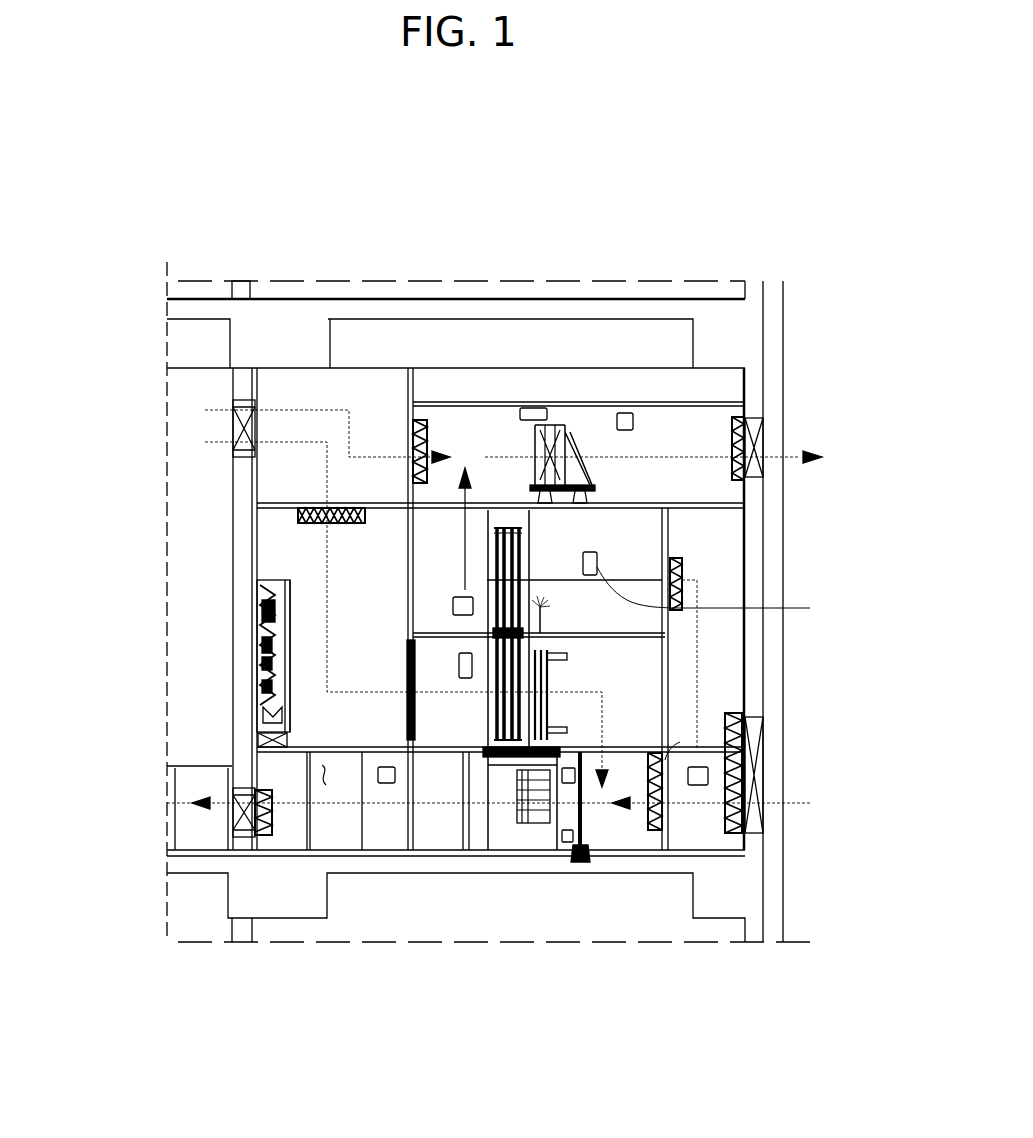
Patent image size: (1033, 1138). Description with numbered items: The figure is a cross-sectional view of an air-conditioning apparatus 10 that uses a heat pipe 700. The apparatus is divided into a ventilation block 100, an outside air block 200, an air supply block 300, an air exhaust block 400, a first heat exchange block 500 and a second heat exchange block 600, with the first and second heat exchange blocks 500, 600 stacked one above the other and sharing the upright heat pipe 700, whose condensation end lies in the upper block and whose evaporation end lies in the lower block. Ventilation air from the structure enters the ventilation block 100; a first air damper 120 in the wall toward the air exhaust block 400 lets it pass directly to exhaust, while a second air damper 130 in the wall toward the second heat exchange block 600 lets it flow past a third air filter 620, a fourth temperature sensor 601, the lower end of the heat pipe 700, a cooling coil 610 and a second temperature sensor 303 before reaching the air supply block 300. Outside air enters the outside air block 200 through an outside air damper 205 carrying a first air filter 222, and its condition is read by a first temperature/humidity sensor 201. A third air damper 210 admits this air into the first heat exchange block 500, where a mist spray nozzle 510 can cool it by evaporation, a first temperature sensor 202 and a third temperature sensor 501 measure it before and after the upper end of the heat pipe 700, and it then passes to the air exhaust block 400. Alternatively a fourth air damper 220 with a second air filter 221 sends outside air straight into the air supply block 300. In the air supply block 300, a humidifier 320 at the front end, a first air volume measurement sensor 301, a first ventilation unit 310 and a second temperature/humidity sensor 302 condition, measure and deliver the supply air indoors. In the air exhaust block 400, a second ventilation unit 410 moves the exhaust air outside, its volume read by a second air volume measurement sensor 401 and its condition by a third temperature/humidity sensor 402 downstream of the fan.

The air-conditioning apparatus 10 is at (740, 205).
The ventilation block 100 is at (314, 393).
The first air damper 120 is at (410, 433).
The second air damper 130 is at (317, 533).
The outside air block 200 is at (700, 643).
The first temperature/humidity sensor 201 is at (698, 767).
The first temperature sensor 202 is at (771, 613).
The outside air damper 205 is at (763, 777).
The third air damper 210 is at (682, 570).
The fourth air damper 220 is at (667, 762).
The second air filter 221 is at (653, 823).
The first air filter 222 is at (720, 817).
The air supply block 300 is at (320, 777).
The first air volume measurement sensor 301 is at (585, 787).
The second temperature/humidity sensor 302 is at (378, 773).
The second temperature sensor 303 is at (493, 707).
The first ventilation unit 310 is at (540, 820).
The humidifier 320 is at (567, 842).
The air exhaust block 400 is at (683, 427).
The second air volume measurement sensor 401 is at (525, 410).
The third temperature/humidity sensor 402 is at (625, 411).
The second ventilation unit 410 is at (570, 443).
The first heat exchange block 500 is at (455, 531).
The third temperature sensor 501 is at (453, 608).
The mist spray nozzle 510 is at (533, 610).
The second heat exchange block 600 is at (750, 797).
The fourth temperature sensor 601 is at (459, 665).
The cooling coil 610 is at (507, 740).
The third air filter 620 is at (407, 717).
The heat pipe 700 is at (500, 675).